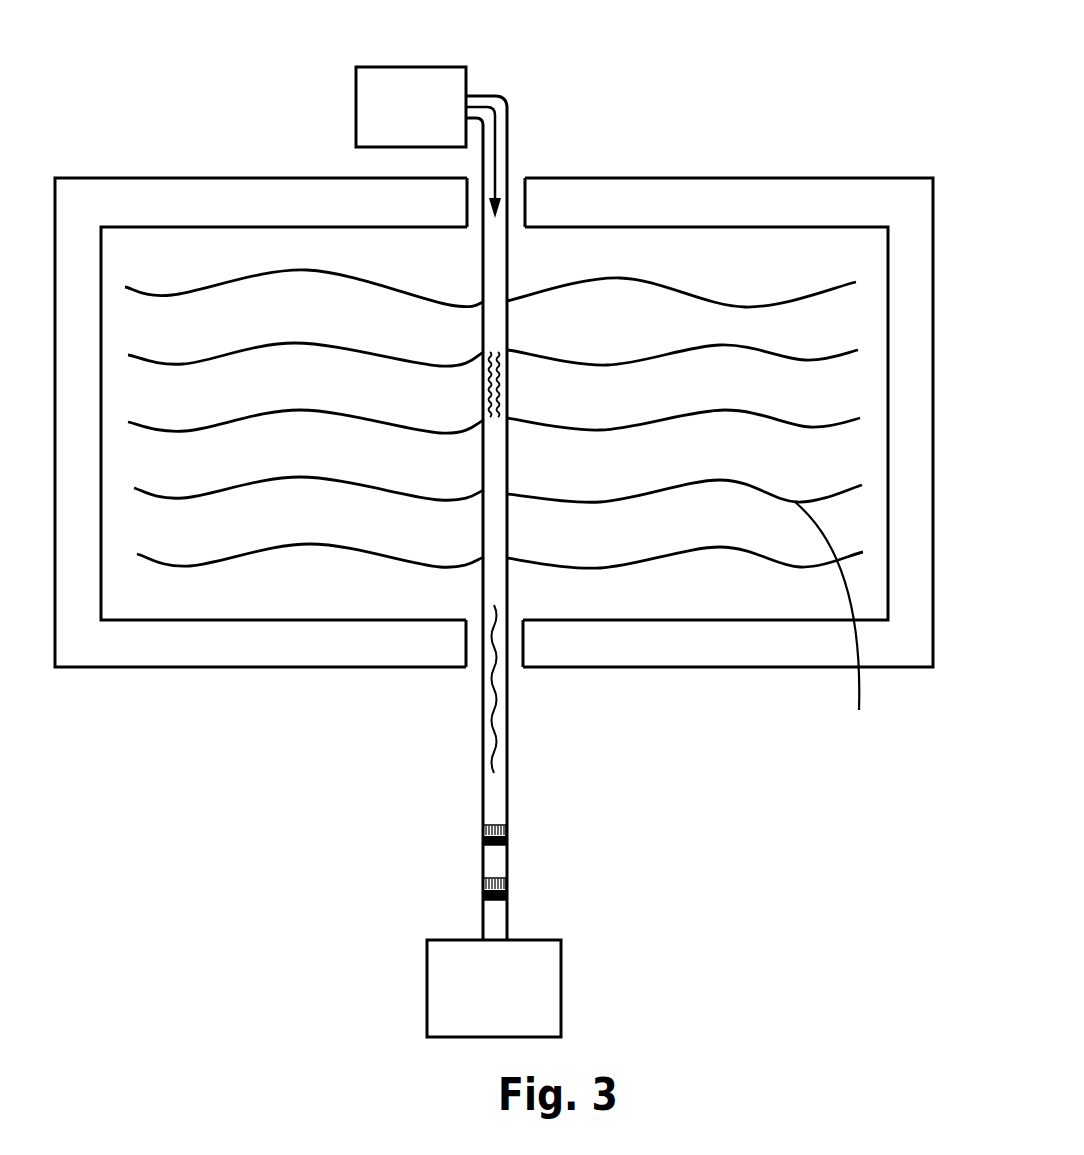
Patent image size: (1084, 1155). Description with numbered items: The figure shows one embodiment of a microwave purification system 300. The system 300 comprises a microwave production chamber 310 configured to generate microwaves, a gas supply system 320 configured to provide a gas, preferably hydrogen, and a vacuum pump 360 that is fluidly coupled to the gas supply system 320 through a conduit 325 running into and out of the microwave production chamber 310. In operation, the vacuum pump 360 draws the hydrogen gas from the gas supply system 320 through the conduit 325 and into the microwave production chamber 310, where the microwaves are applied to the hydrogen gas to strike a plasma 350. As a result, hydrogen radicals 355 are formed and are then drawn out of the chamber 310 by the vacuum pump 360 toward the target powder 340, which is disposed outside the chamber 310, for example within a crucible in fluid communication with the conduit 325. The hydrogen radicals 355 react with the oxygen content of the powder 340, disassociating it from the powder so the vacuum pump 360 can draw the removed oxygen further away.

The microwave purification system 300 is at (748, 35).
The microwave production chamber 310 is at (789, 178).
The gas supply system 320 is at (356, 96).
The conduit 325 is at (507, 130).
The target powder 340 is at (506, 833).
The plasma 350 is at (485, 378).
The hydrogen radicals 355 is at (485, 693).
The vacuum pump 360 is at (561, 982).